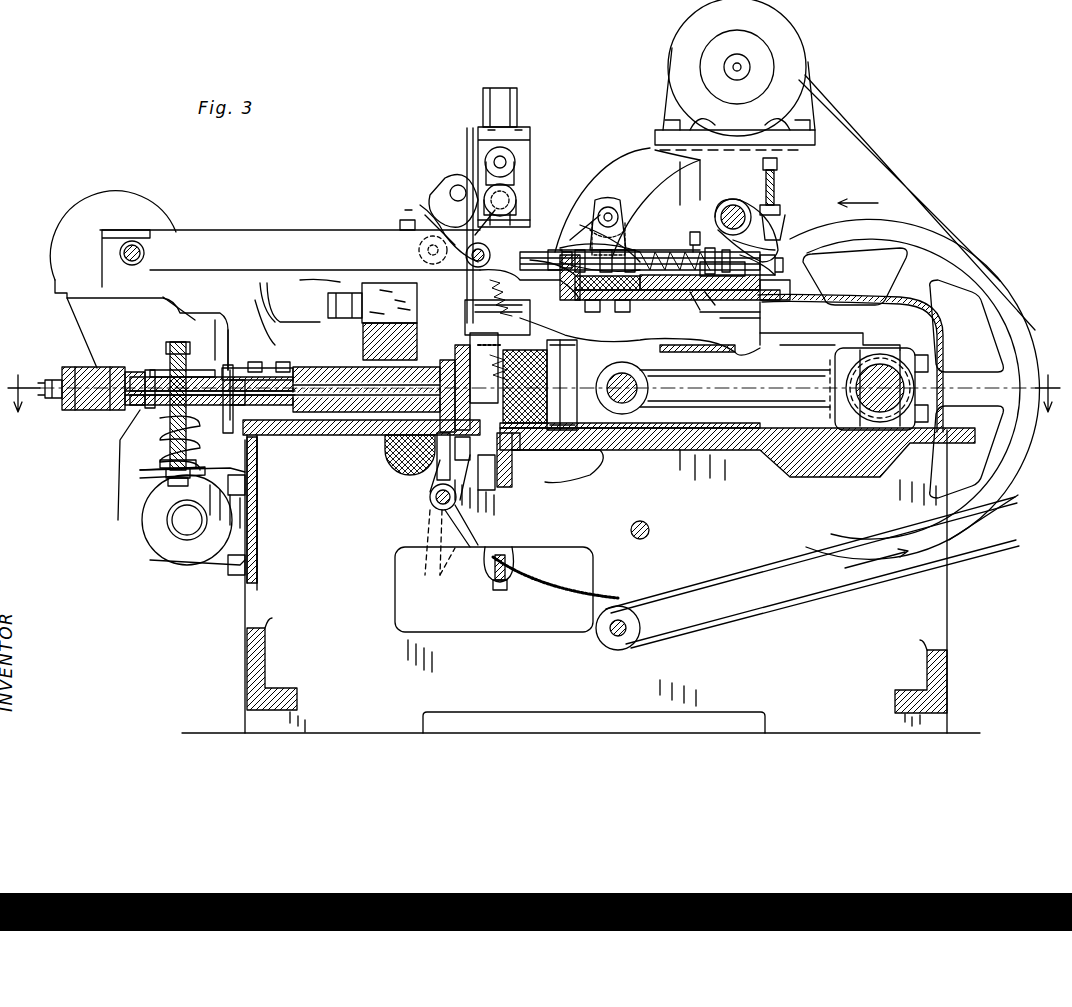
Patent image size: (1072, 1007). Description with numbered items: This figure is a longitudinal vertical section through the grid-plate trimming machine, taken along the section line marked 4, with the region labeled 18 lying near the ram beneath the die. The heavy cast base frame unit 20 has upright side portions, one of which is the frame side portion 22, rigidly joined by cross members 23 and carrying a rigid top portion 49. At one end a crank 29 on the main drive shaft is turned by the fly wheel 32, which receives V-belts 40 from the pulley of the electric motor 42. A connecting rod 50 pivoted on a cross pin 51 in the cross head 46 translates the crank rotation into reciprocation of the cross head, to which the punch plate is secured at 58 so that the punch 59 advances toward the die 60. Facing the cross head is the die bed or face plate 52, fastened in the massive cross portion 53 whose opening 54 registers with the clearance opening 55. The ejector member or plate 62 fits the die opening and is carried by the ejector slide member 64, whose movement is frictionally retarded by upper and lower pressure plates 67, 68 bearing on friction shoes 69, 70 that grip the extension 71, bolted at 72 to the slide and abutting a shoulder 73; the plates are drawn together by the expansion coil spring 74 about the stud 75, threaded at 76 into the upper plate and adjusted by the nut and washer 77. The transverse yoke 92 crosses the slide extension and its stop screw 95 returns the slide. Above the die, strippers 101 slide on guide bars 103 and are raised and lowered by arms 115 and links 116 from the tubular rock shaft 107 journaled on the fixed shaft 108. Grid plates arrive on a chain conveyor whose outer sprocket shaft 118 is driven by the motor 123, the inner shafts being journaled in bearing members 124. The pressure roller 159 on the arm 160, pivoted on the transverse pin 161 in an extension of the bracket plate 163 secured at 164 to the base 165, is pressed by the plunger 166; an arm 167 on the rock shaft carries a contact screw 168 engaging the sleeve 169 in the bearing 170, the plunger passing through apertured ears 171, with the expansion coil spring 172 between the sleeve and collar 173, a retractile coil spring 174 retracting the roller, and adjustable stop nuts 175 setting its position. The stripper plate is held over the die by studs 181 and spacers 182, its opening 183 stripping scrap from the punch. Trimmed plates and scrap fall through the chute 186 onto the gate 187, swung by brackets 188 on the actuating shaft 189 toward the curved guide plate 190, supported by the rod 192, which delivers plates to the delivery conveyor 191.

The section line 4- 4 is at (534, 407).
The ram 18 is at (500, 470).
The main or base frame unit 20 is at (243, 620).
The frame side portion 22 is at (581, 695).
The cross members 23 is at (270, 650).
The crank 29 is at (895, 388).
The fly wheel 32 is at (957, 252).
The V-belts 40 is at (878, 165).
The electric motor 42 is at (785, 40).
The cross head 46 is at (602, 445).
The rigid top portion of the frame 49 is at (672, 447).
The connecting rod 50 is at (808, 352).
The cross pin 51 is at (650, 392).
The die bed or face plate 52 is at (440, 440).
The massive cross portion 53 is at (410, 440).
The opening 54 is at (363, 360).
The clearance opening 55 is at (410, 452).
The securing of punch plate 58 is at (578, 352).
The punch 59 is at (505, 335).
The die 60 is at (440, 470).
The ejector member or plate 62 is at (438, 478).
The ejector slide member 64 is at (320, 432).
The upper pressure plate 67 is at (195, 368).
The lower pressure plate 68 is at (145, 412).
The upper friction shoe 69 is at (150, 370).
The lower friction shoe 70 is at (130, 408).
The extension 71 is at (148, 410).
The bolt 72 is at (284, 362).
The shoulder 73 is at (286, 370).
The expansion coil spring 74 is at (165, 440).
The stud 75 is at (150, 476).
The threaded connection 76 is at (184, 358).
The nut and washer 77 is at (170, 480).
The transverse yoke 92 is at (118, 368).
The stop screw 95 is at (80, 412).
The strippers or stripper bars 101 is at (467, 142).
The guide bars 103 is at (510, 90).
The tubular rock shaft 107 is at (750, 186).
The fixed shaft 108 is at (782, 210).
The arms 115 is at (672, 195).
The links 116 is at (515, 165).
The outer sprocket shaft 118 is at (140, 250).
The motor 123 is at (160, 550).
The bearing members 124 is at (436, 185).
The pressure roller 159 is at (445, 270).
The arm 160 is at (440, 210).
The transverse pin 161 is at (495, 250).
The bracket plate 163 is at (590, 300).
The securing point 164 is at (600, 312).
The base 165 is at (710, 290).
The plunger 166 is at (562, 251).
The arm 167 is at (788, 232).
The contact screw 168 is at (800, 277).
The sleeve 169 is at (706, 290).
The bearing 170 is at (735, 300).
The apertured ears 171 is at (578, 240).
The expansion coil spring 172 is at (635, 258).
The collar 173 is at (630, 240).
The retractile coil spring 174 is at (510, 318).
The adjustable stop nuts 175 is at (575, 205).
The studs 181 is at (505, 458).
The spacers 182 is at (475, 492).
The opening 183 is at (560, 470).
The chute 186 is at (432, 508).
The gate 187 is at (447, 560).
The brackets 188 is at (430, 545).
The actuating shaft 189 is at (450, 515).
The curved guide plate 190 is at (562, 590).
The delivery conveyor 191 is at (794, 548).
The rod 192 is at (490, 575).